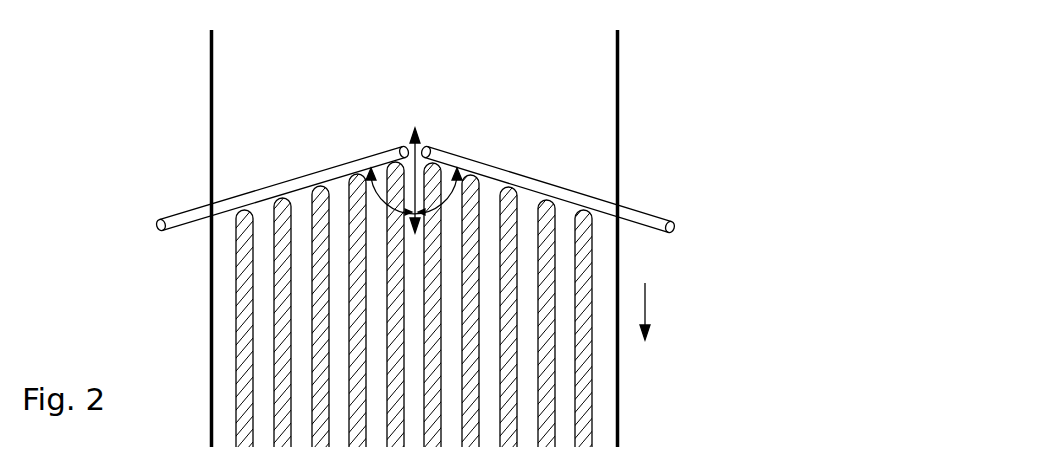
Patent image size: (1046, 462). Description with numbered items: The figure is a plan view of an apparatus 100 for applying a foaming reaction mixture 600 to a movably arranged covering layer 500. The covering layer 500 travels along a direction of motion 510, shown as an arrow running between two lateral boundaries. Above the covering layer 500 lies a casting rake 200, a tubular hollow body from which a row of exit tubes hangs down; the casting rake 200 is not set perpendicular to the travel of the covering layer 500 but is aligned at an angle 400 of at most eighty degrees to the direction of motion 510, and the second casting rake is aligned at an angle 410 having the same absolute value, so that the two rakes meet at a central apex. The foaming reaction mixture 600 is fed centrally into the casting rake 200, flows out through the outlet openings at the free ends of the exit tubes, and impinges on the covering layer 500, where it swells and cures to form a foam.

The apparatus 100 is at (682, 91).
The casting rake 200 is at (611, 184).
The angle 400 is at (227, 160).
The angle 410 is at (453, 197).
The covering layer 500 is at (608, 395).
The direction of motion 510 is at (646, 300).
The foaming reaction mixture 600 is at (363, 172).